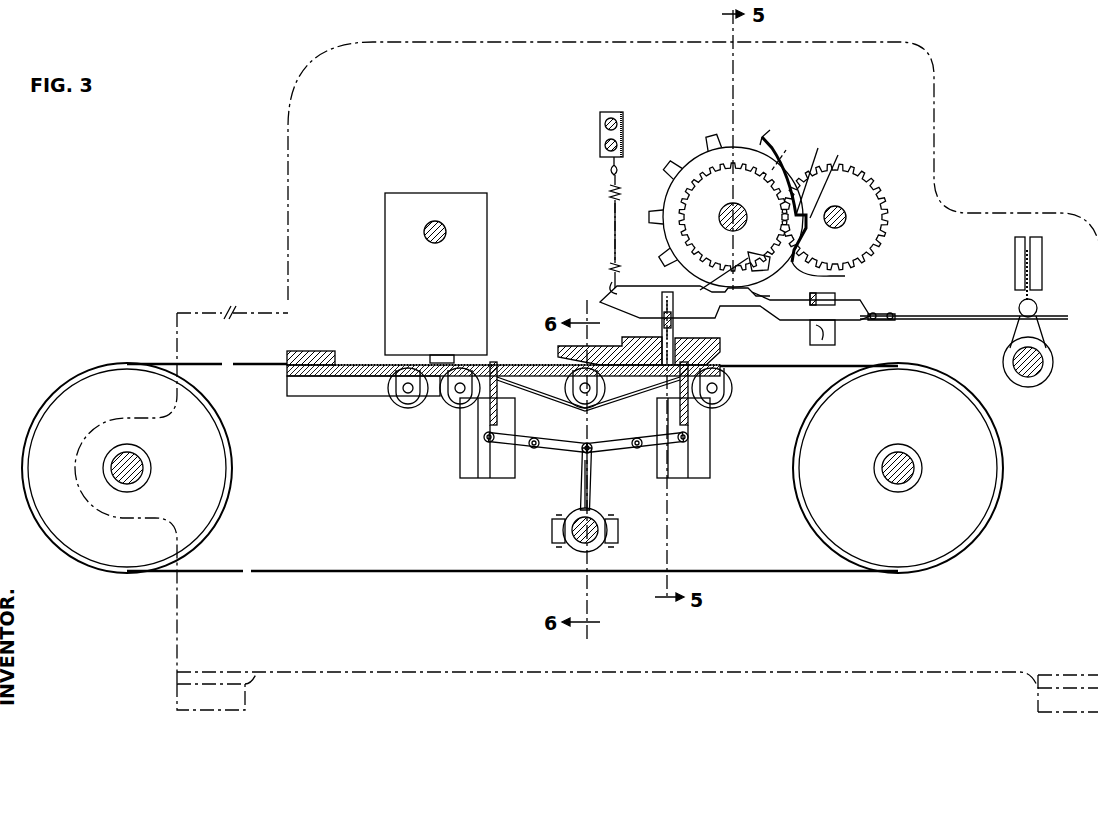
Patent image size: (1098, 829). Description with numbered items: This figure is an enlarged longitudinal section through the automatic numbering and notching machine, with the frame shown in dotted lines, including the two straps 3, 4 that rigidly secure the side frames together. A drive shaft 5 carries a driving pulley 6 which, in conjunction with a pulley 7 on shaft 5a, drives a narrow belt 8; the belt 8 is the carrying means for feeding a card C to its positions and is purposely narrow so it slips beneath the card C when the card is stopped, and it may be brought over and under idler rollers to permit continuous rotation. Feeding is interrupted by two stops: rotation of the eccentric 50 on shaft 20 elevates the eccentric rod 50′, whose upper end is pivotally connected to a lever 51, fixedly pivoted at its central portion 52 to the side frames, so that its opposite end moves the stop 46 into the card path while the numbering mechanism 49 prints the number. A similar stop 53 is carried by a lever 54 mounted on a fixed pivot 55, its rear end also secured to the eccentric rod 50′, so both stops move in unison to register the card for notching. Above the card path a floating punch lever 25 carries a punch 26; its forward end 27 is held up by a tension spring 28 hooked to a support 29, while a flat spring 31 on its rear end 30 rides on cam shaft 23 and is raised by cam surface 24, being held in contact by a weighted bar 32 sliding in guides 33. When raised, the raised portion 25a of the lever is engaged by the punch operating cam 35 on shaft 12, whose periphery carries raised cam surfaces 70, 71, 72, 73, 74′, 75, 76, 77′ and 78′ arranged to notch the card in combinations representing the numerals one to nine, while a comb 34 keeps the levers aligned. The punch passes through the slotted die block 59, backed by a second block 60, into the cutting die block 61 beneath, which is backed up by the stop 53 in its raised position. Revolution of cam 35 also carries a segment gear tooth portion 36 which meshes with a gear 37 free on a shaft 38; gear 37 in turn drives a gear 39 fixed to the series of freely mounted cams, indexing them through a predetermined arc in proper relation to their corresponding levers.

The strap 3 is at (222, 672).
The strap 4 is at (1058, 675).
The drive shaft 5 is at (912, 470).
The shaft 5a is at (140, 470).
The driving pulley 6 is at (990, 493).
The pulley 7 is at (70, 395).
The belt 8 is at (334, 566).
The shaft 12 is at (745, 215).
The shaft 20 is at (575, 538).
The cam shaft 23 is at (1032, 382).
The cam surface 24 is at (1042, 350).
The punch lever 25 is at (790, 322).
The raised portion 25a is at (733, 318).
The punch 26 is at (673, 338).
The forward end 27 is at (610, 292).
The tension spring 28 is at (609, 206).
The support 29 is at (600, 125).
The rear end 30 is at (890, 312).
The flat spring 31 is at (930, 316).
The weighted bar 32 is at (1037, 306).
The guide 33 is at (1014, 262).
The comb 34 is at (836, 336).
The punch operating cam 35 is at (734, 148).
The segment gear tooth portion 36 is at (712, 252).
The gear 37 is at (870, 190).
The shaft 38 is at (848, 215).
The gear 39 is at (780, 160).
The stop 46 is at (490, 410).
The numbering mechanism 49 is at (392, 247).
The eccentric 50 is at (600, 520).
The eccentric rod 50′ is at (580, 491).
The lever 51 is at (548, 448).
The central portion 52 is at (536, 438).
The stop 53 is at (705, 412).
The lever 54 is at (612, 450).
The fixed pivot 55 is at (636, 438).
The die block 59 is at (606, 346).
The second block 60 is at (722, 350).
The cutting die block 61 is at (536, 364).
The cam surface 70 is at (758, 292).
The cam surface 71 is at (845, 276).
The cam surface 72 is at (826, 170).
The cam surface 73 is at (812, 160).
The cam surface 74′ is at (772, 140).
The cam surface 75 is at (712, 137).
The cam surface 76 is at (676, 158).
The cam surface 77′ is at (654, 212).
The cam surface 78′ is at (664, 266).
The card C is at (352, 364).